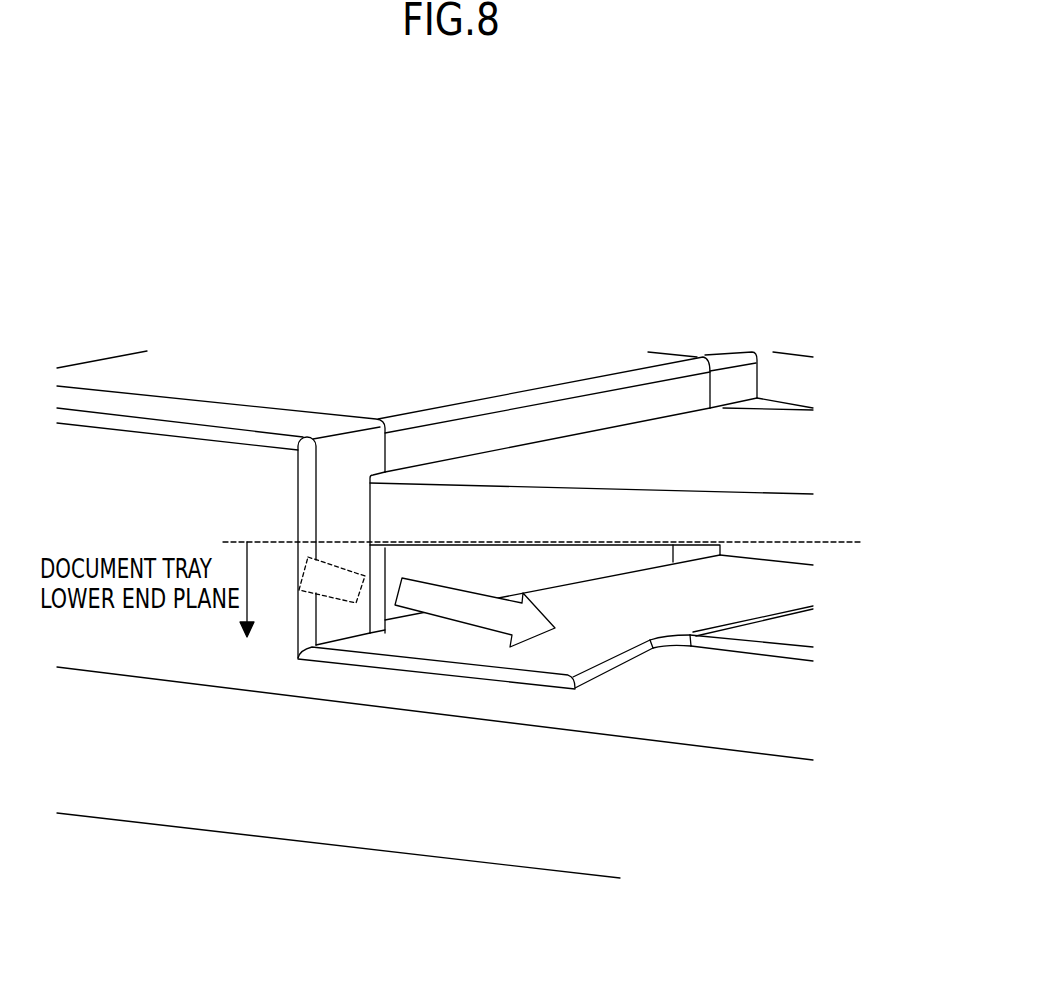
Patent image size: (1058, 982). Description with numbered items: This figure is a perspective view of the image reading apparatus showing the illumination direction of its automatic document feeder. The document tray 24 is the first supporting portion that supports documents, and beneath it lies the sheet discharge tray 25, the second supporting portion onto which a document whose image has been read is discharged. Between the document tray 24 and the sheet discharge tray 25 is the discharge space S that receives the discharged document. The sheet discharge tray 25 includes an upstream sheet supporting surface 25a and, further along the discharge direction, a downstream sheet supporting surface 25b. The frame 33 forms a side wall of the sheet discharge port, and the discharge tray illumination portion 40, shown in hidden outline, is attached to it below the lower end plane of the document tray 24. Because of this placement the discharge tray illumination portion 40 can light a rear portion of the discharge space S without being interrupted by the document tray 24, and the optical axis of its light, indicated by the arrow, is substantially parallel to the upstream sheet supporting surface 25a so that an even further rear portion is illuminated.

The frame 33 is at (93, 400).
The document tray 24 is at (553, 448).
The discharge tray illumination portion 40 is at (330, 598).
The upstream sheet supporting surface 25a is at (467, 645).
The sheet discharge tray 25 is at (706, 655).
The downstream sheet supporting surface 25b is at (800, 632).
The discharge space S is at (622, 615).